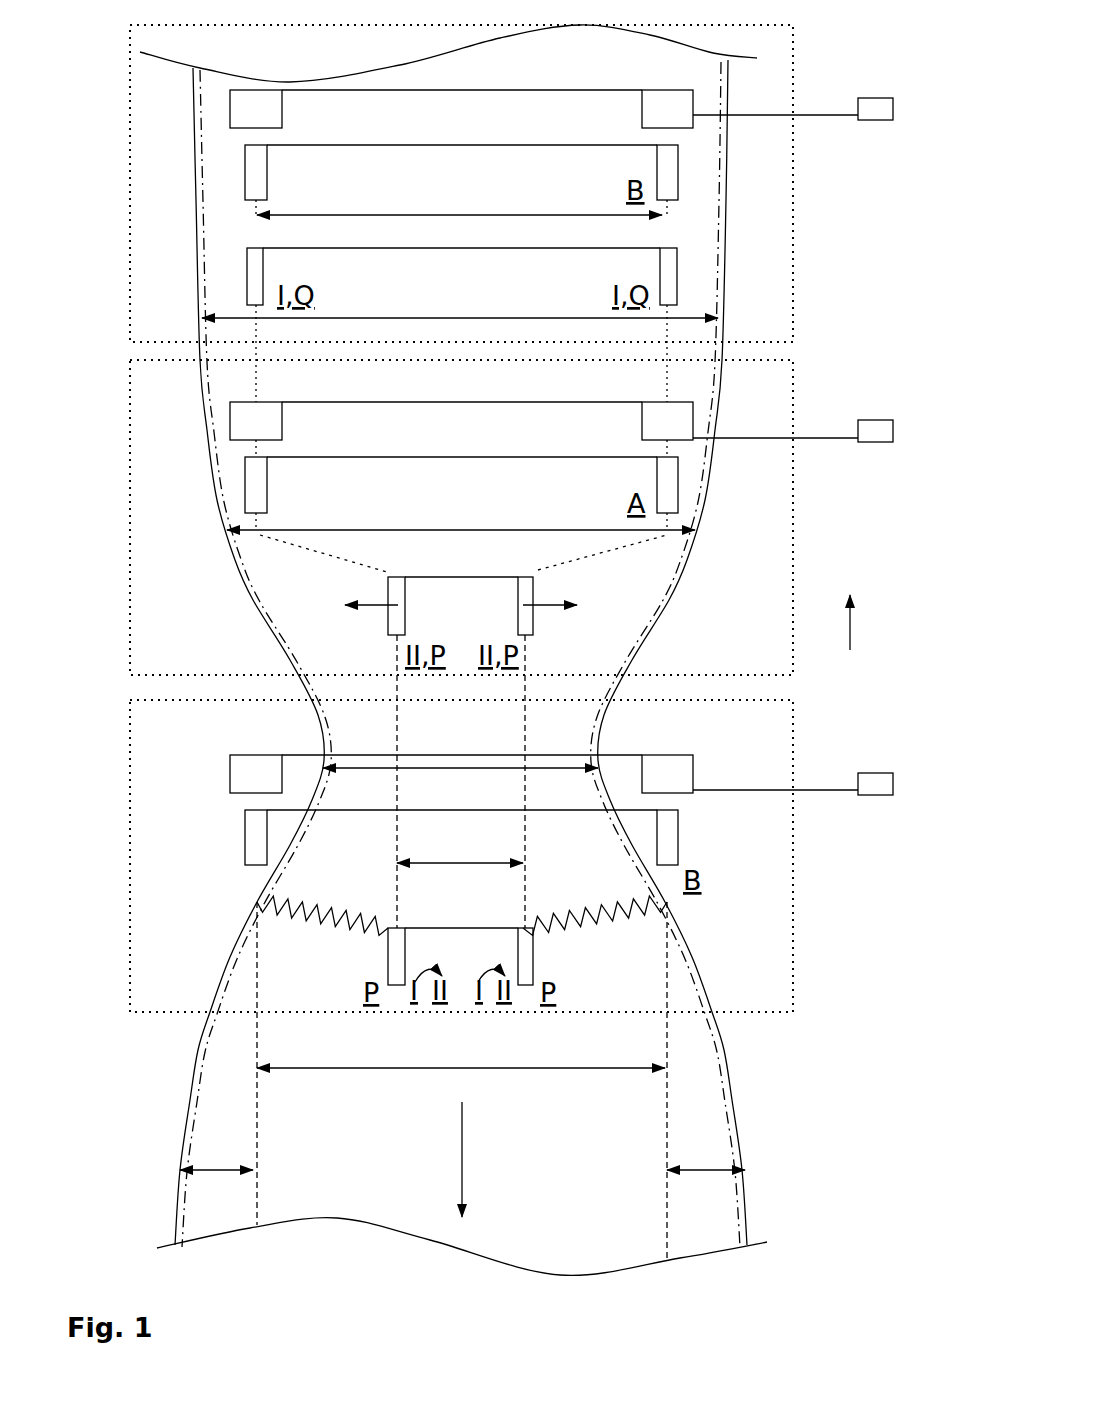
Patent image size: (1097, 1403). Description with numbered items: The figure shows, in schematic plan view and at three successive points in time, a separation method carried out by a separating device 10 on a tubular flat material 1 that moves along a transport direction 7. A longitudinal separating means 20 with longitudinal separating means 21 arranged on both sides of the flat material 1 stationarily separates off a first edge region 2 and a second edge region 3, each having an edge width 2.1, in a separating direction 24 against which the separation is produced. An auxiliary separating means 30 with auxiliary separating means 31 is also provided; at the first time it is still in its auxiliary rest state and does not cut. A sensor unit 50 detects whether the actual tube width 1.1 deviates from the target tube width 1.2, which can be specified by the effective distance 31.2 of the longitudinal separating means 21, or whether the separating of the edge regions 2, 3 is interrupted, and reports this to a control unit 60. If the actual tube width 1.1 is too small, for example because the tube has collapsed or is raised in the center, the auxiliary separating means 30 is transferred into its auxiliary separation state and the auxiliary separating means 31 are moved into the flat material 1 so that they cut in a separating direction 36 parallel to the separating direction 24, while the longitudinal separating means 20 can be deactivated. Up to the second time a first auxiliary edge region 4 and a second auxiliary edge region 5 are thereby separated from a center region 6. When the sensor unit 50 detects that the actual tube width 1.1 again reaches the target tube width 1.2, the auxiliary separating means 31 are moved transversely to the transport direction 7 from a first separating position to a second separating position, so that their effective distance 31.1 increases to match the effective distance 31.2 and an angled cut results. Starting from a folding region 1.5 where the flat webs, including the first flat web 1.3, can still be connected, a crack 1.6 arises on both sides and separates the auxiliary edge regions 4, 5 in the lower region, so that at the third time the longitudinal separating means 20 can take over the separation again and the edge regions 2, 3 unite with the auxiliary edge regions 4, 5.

The flat material 1 is at (733, 58).
The first edge region 2 is at (700, 130).
The second edge region 3 is at (217, 143).
The first auxiliary edge region 4 is at (607, 617).
The second auxiliary edge region 5 is at (320, 637).
The center region 6 is at (483, 895).
The transport direction 7 is at (462, 1155).
The separating device 10 is at (140, 97).
The longitudinal separating means 20 is at (688, 188).
The longitudinal separating means 21 is at (251, 178).
The separating direction 24 is at (850, 635).
The auxiliary separating means 30 is at (686, 287).
The auxiliary separating means 31 is at (260, 265).
The separating direction 36 is at (938, 632).
The sensor unit 50 is at (693, 103).
The control unit 60 is at (875, 120).
The actual tube width 1.1 is at (410, 318).
The target tube width 1.2 is at (395, 192).
The first flat web 1.3 is at (645, 1102).
The folding region 1.5 is at (183, 1125).
The crack 1.6 is at (305, 912).
The edge width 2.1 is at (215, 1172).
The effective distance 31.1 is at (455, 860).
The effective distance 31.2 is at (462, 177).